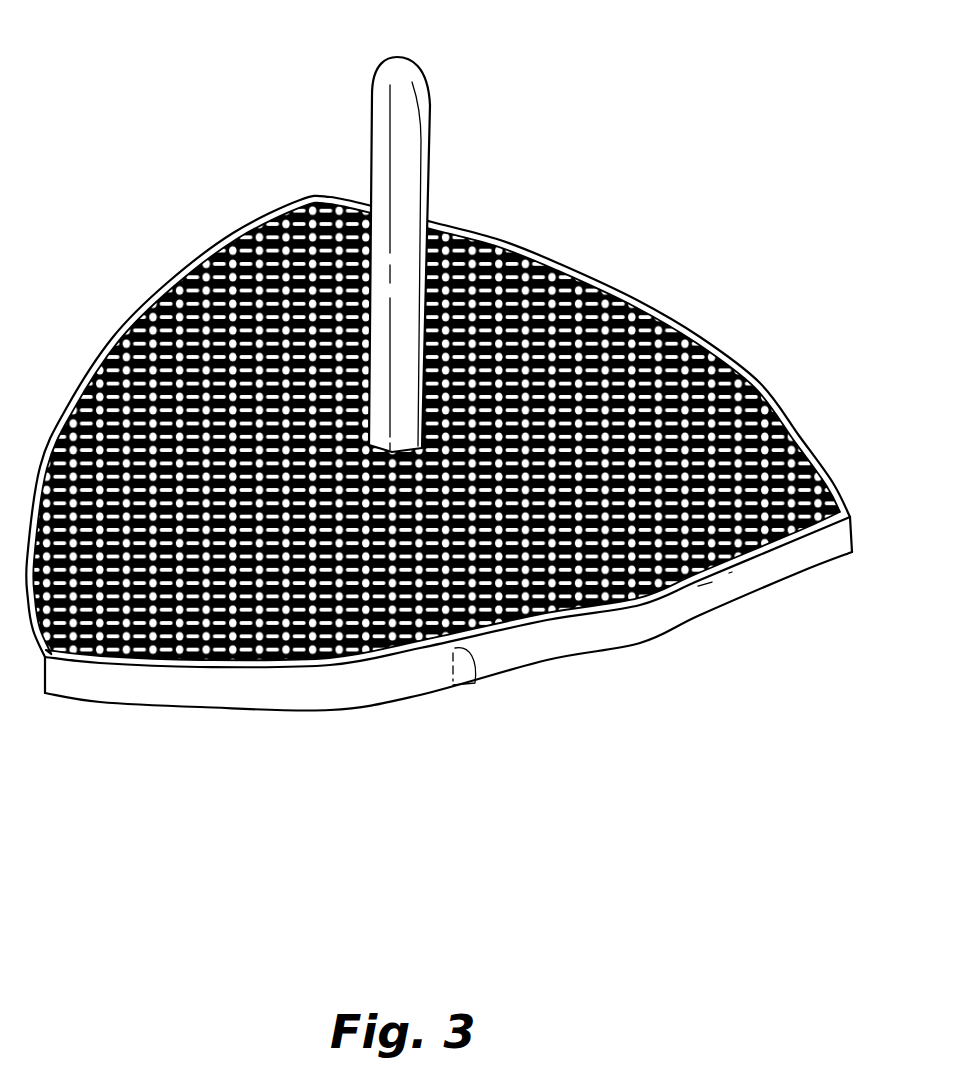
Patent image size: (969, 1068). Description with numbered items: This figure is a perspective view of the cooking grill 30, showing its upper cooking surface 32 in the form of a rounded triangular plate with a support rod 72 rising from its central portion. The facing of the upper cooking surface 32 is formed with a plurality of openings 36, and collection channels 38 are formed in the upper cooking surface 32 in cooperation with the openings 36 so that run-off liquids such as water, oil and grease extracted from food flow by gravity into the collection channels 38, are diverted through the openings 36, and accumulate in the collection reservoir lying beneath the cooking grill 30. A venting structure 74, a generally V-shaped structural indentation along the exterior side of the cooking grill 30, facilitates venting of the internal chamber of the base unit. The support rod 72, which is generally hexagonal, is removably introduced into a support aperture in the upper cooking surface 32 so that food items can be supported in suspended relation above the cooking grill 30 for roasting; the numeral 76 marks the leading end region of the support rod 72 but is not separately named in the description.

The cooking grill 30 is at (448, 369).
The upper cooking surface 32 is at (762, 378).
The openings 36 is at (152, 363).
The collection channels 38 is at (263, 257).
The support rod 72 is at (470, 227).
The venting structure 74 is at (458, 668).
The post tip 76 is at (405, 115).